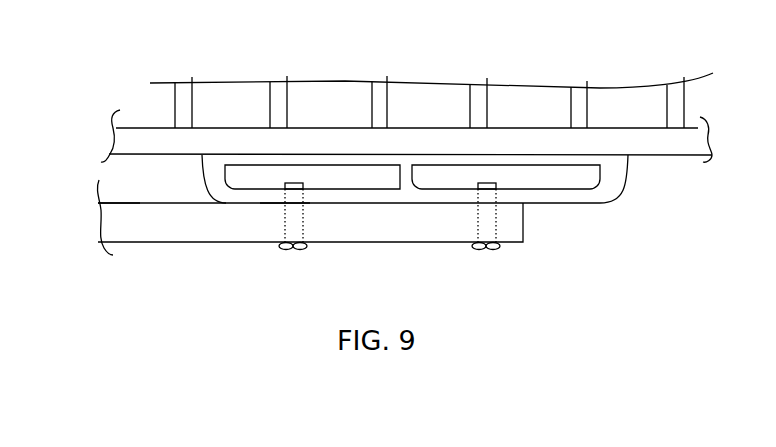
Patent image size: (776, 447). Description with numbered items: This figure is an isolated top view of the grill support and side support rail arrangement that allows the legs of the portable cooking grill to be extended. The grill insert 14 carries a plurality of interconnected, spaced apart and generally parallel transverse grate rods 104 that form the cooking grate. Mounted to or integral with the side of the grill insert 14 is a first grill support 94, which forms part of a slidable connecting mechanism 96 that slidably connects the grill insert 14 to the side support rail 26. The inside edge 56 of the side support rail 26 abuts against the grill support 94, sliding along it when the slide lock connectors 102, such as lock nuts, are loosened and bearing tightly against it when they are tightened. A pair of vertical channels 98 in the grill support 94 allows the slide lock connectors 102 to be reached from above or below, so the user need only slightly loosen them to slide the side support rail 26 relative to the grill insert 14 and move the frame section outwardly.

The grill insert 14 is at (600, 142).
The transverse grate rods 104 is at (278, 103).
The inside edge of side support rail 56 is at (129, 190).
The side support rail 26 is at (185, 222).
The first grill support 94 is at (602, 213).
The vertical channels 98 is at (382, 182).
The slidable connecting mechanism 96 is at (274, 203).
The slide lock connectors 102 is at (310, 248).